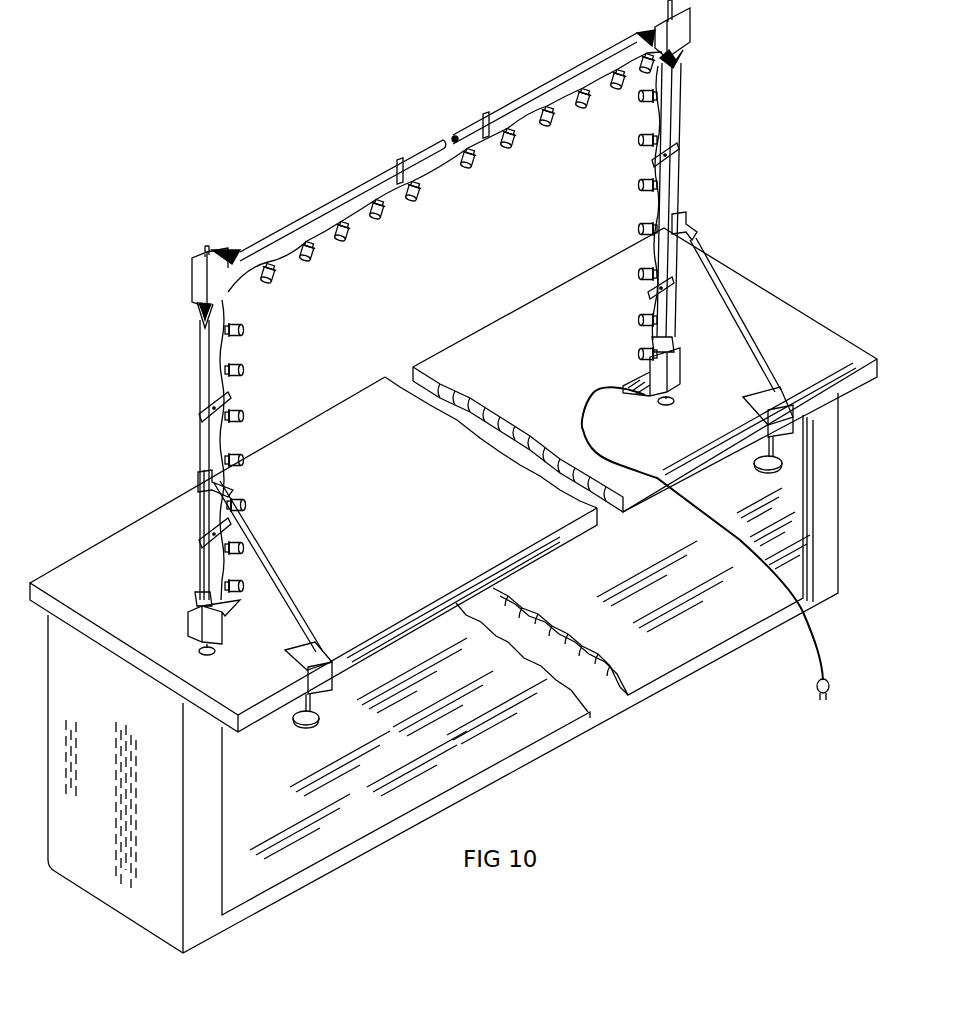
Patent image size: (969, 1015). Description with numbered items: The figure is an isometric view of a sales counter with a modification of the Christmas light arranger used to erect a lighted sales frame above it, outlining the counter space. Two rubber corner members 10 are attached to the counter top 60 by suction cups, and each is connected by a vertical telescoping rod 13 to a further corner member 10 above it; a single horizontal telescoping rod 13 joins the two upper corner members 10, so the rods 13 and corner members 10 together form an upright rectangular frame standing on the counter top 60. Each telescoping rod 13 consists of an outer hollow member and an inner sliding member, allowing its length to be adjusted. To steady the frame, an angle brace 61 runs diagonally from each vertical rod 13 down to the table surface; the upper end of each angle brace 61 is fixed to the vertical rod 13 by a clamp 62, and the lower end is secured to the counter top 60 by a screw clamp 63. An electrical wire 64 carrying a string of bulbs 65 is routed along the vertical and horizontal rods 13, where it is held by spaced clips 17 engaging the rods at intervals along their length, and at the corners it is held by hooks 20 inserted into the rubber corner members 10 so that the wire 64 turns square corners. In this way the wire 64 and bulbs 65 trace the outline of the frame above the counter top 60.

The corner member 10 is at (192, 274).
The telescoping rod member 13 is at (202, 364).
The clamp 17 is at (198, 425).
The hook member 20 is at (197, 303).
The counter top 60 is at (405, 493).
The angle brace 61 is at (282, 566).
The clamp 62 is at (202, 482).
The screw clamp 63 is at (333, 668).
The electrical wire 64 is at (225, 349).
The bulbs 65 is at (267, 283).